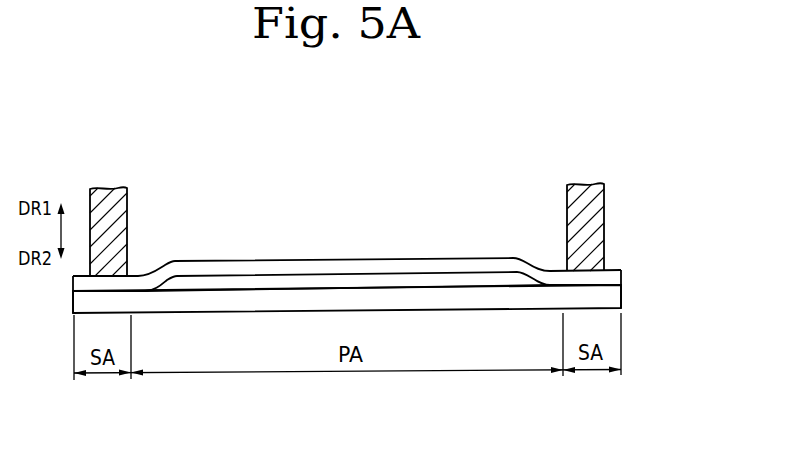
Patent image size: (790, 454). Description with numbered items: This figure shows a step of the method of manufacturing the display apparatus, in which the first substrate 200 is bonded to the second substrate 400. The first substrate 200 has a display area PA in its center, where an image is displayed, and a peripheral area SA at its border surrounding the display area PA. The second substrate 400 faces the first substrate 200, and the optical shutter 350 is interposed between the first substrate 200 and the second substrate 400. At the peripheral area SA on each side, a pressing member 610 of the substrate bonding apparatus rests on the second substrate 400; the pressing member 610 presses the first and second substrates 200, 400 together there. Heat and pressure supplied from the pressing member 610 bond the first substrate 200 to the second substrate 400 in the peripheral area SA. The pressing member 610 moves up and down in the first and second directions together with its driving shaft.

The first substrate 200 is at (607, 299).
The optical shutter 350 is at (413, 278).
The second substrate 400 is at (607, 277).
The pressing member 610 is at (597, 211).